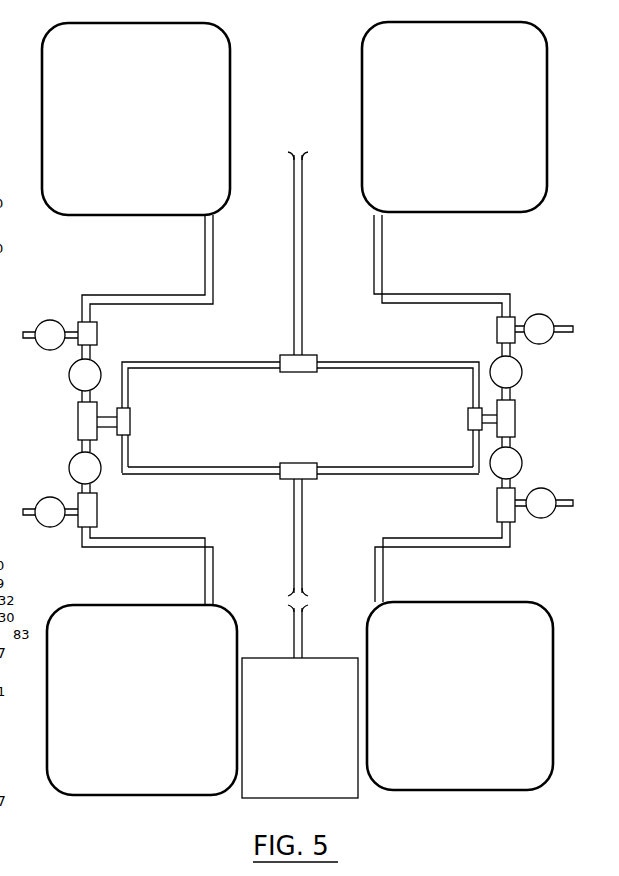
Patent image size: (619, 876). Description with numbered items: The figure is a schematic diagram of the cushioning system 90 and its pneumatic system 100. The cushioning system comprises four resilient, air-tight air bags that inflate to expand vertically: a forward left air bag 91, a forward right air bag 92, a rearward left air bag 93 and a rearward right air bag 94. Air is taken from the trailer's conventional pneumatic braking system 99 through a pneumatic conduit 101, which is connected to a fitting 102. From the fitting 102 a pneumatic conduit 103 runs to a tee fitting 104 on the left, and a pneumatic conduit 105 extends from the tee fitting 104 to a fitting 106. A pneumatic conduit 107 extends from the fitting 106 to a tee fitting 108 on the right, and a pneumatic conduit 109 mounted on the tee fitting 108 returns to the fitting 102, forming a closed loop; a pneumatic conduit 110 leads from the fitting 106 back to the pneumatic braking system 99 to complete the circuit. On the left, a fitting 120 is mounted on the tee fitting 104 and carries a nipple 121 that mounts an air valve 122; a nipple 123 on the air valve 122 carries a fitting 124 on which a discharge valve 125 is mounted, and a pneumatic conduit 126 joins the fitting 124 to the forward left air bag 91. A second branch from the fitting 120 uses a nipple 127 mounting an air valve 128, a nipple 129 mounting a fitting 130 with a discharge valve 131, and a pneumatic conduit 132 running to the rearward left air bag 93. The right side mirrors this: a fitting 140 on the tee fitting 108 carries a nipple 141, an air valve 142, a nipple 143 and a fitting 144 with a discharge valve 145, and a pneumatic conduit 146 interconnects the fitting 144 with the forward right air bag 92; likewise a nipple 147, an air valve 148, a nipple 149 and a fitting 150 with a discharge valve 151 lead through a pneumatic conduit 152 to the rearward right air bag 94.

The cushioning system 90 is at (569, 198).
The forward left air bag 91 is at (133, 111).
The forward right air bag 92 is at (451, 111).
The rearward left air bag 93 is at (140, 708).
The rearward right air bag 94 is at (461, 703).
The pneumatic braking system 99 is at (337, 798).
The pneumatic system 100 is at (408, 291).
The pneumatic conduit 101 is at (303, 527).
The fitting 102 is at (301, 462).
The pneumatic conduit 103 is at (207, 463).
The tee fitting 104 is at (130, 423).
The pneumatic conduit 105 is at (183, 361).
The fitting 106 is at (304, 372).
The pneumatic conduit 107 is at (393, 369).
The tee fitting 108 is at (468, 420).
The pneumatic conduit 109 is at (420, 474).
The pneumatic conduit 110 is at (302, 257).
The fitting 120 is at (78, 417).
The nipple 121 is at (82, 396).
The air valve 122 is at (69, 370).
The nipple 123 is at (91, 352).
The fitting 124 is at (97, 327).
The discharge valve 125 is at (47, 320).
The pneumatic conduit 126 is at (213, 258).
The nipple 127 is at (82, 446).
The air valve 128 is at (69, 470).
The nipple 129 is at (91, 488).
The fitting 130 is at (97, 513).
The discharge valve 131 is at (55, 530).
The pneumatic conduit 132 is at (215, 562).
The fitting 140 is at (515, 417).
The nipple 141 is at (511, 393).
The air valve 142 is at (523, 367).
The nipple 143 is at (500, 350).
The fitting 144 is at (497, 325).
The discharge valve 145 is at (532, 316).
The pneumatic conduit 146 is at (472, 291).
The nipple 147 is at (511, 442).
The air valve 148 is at (523, 462).
The nipple 149 is at (501, 483).
The fitting 150 is at (497, 505).
The discharge valve 151 is at (540, 520).
The pneumatic conduit 152 is at (383, 572).